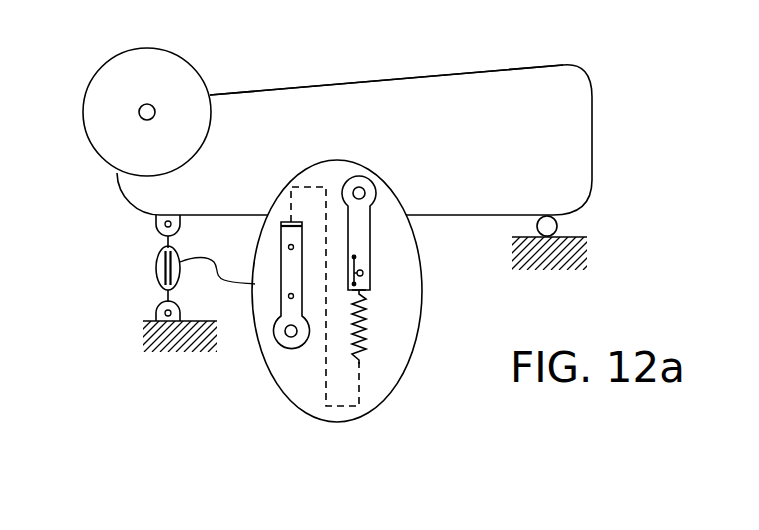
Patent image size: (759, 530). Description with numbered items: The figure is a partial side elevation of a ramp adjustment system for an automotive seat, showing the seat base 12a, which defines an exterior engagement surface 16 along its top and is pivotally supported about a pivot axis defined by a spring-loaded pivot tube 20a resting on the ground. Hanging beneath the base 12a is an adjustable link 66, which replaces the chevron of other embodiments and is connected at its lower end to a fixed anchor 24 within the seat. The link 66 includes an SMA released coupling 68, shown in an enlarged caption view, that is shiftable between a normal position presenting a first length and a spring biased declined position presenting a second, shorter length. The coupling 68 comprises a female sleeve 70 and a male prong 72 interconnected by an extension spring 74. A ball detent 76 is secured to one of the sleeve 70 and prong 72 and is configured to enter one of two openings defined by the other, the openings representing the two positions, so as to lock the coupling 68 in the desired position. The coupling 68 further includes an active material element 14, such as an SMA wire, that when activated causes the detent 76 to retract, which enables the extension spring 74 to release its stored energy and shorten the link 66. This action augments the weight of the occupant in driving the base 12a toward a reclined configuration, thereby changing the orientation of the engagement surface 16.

The base 12a is at (460, 164).
The exterior engagement surface 16 is at (385, 80).
The pivot tube 20a is at (557, 223).
The adjustable link 66 is at (143, 262).
The fixed anchor 24 is at (168, 352).
The SMA released coupling 68 is at (305, 375).
The female sleeve 70 is at (273, 328).
The male prong 72 is at (370, 229).
The active material element 14 is at (357, 265).
The ball detent 76 is at (363, 273).
The extension spring 74 is at (363, 350).